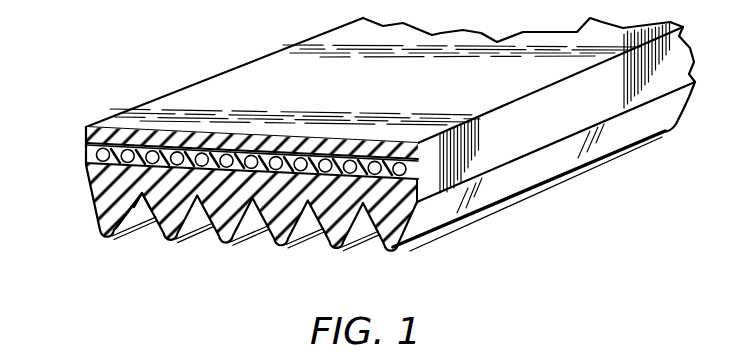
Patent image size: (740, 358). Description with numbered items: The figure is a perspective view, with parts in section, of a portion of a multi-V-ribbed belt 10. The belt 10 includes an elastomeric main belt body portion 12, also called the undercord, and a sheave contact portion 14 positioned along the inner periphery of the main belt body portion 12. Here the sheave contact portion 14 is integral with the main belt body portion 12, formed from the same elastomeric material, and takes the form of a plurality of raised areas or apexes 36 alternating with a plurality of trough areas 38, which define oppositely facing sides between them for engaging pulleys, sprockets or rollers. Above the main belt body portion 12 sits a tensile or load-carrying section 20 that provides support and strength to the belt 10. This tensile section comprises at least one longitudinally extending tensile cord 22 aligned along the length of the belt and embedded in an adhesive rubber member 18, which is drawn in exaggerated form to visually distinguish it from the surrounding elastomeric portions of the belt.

The multi-V-ribbed belt 10 is at (229, 49).
The main belt body portion 12 is at (403, 200).
The sheave contact portion 14 is at (243, 240).
The adhesive rubber member 18 is at (86, 140).
The load-carrying section 20 is at (426, 173).
The tensile cord 22 is at (118, 163).
The apexes 36 is at (113, 238).
The trough areas 38 is at (140, 194).